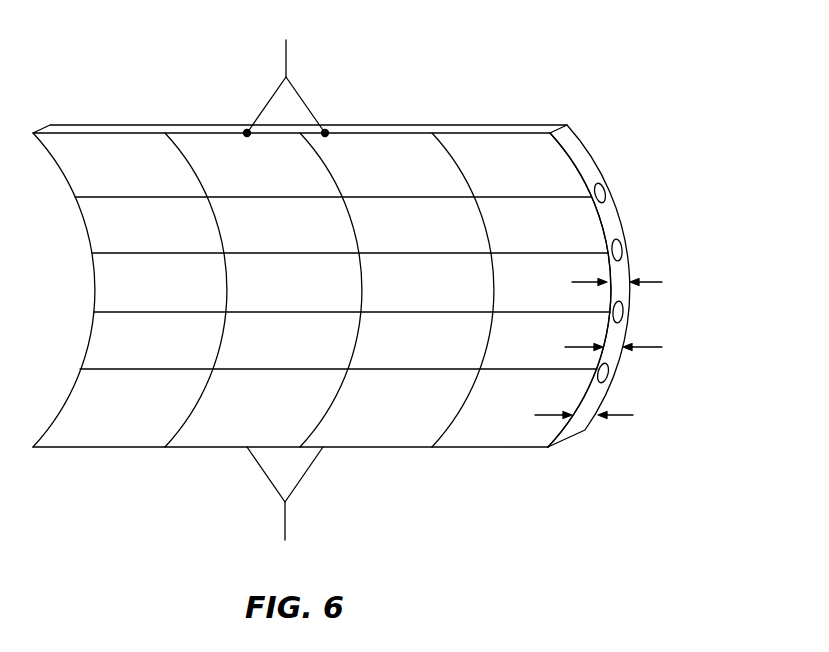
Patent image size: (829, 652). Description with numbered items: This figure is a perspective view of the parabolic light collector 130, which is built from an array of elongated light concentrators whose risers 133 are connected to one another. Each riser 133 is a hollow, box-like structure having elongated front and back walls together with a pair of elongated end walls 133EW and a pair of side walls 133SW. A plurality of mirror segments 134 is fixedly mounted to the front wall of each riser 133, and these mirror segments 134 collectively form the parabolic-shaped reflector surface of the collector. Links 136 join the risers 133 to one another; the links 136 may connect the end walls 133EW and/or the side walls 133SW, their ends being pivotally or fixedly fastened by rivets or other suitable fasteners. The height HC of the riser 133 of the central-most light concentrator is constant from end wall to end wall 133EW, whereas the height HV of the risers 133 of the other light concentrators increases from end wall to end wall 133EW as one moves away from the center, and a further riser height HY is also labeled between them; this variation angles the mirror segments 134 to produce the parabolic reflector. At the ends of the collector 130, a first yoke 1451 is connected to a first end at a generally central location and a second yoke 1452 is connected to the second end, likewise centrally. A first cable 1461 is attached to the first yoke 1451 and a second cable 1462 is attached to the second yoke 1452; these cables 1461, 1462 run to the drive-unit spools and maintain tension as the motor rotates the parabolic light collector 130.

The parabolic light collector 130 is at (380, 296).
The riser 133 is at (583, 158).
The end wall 133EW is at (457, 128).
The side wall 133SW is at (596, 178).
The mirror segment 134 is at (518, 181).
The link 136 is at (605, 198).
The first yoke 1451 is at (295, 488).
The second yoke 1452 is at (297, 92).
The first cable 1461 is at (286, 527).
The second cable 1462 is at (287, 52).
The height of the riser of the central-most light concentrator HC is at (635, 288).
The intermediate height HY is at (629, 353).
The height of the risers of the other light concentrators HV is at (601, 421).